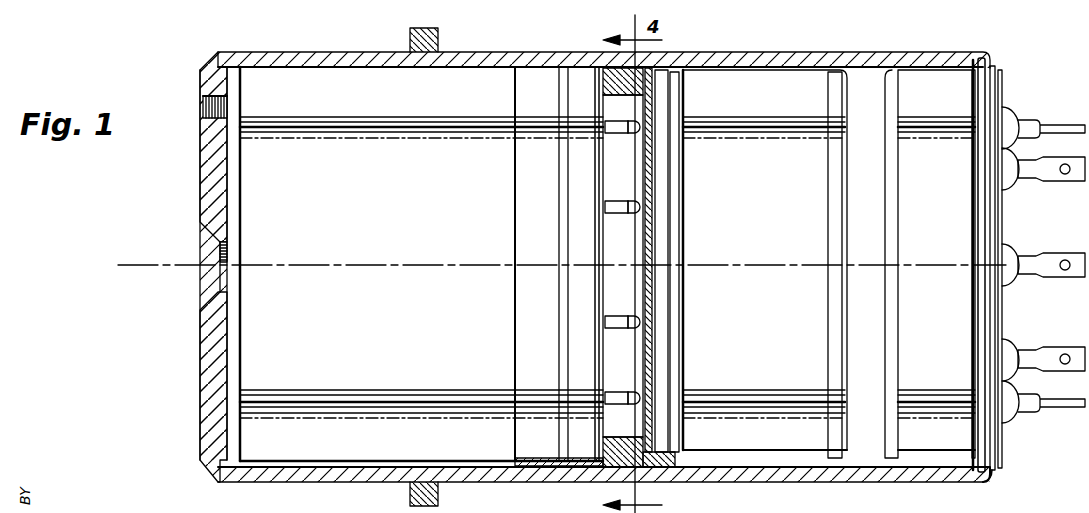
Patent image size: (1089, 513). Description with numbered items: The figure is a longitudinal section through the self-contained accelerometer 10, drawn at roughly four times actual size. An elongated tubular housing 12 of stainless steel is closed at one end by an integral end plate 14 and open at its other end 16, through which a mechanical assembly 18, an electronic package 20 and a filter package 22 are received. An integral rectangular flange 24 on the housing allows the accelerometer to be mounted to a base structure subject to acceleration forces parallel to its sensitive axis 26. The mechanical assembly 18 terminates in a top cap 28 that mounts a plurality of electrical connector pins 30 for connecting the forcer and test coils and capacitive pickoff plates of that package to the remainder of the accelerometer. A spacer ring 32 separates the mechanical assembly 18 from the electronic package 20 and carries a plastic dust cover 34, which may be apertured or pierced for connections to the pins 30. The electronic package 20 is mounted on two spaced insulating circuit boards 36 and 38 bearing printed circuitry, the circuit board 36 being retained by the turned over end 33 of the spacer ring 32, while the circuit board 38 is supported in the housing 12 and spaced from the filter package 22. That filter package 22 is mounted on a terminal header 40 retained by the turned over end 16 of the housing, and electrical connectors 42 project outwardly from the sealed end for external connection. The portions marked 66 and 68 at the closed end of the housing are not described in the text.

The self-contained accelerometer 10 is at (912, 50).
The elongated tubular housing 12 is at (306, 478).
The integral end plate 14 is at (213, 150).
The open end of housing 16 is at (992, 476).
The mechanical assembly 18 is at (270, 332).
The electronic package 20 is at (762, 435).
The filter package 22 is at (918, 443).
The integral rectangular flange 24 is at (436, 36).
The sensitive axis 26 is at (144, 263).
The top cap 28 is at (621, 252).
The electrical connector pins 30 is at (614, 135).
The spacer ring 32 is at (612, 470).
The turned over end of spacer ring 33 is at (668, 465).
The plastic dust cover 34 is at (650, 267).
The insulating circuit board 36 is at (660, 106).
The insulating circuit board 38 is at (838, 75).
The terminal header 40 is at (988, 220).
The electrical connectors 42 is at (1068, 178).
The lower cap portion 66 is at (212, 302).
The threads 68 is at (204, 101).